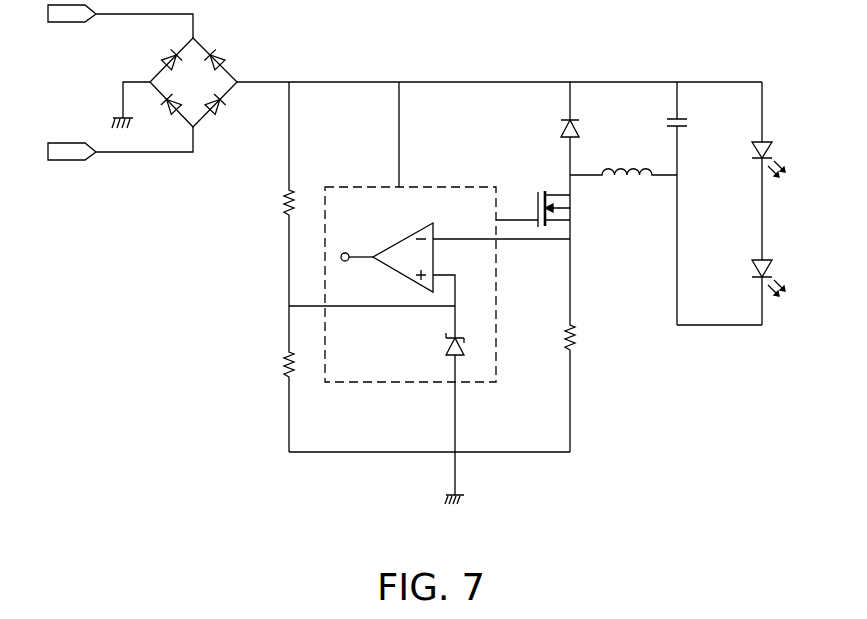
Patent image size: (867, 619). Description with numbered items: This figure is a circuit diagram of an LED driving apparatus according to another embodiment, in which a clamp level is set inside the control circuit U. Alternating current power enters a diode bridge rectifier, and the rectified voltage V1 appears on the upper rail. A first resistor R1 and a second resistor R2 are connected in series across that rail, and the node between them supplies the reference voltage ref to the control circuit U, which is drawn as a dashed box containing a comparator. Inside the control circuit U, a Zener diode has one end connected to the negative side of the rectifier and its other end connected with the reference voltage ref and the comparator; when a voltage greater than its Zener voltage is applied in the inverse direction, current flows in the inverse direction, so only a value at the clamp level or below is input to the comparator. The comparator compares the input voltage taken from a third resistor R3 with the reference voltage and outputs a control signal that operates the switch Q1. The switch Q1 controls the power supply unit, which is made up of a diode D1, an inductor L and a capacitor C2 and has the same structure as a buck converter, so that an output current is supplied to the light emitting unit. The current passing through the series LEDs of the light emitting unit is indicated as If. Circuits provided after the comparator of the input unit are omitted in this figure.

The first resistor R1 is at (273, 194).
The second resistor R2 is at (273, 379).
The third resistor R3 is at (553, 345).
The rectified voltage V1 is at (401, 121).
The control circuit U is at (429, 290).
The reference voltage ref is at (372, 320).
The diode D1 is at (553, 128).
The switch Q1 is at (533, 207).
The inductor L is at (623, 158).
The capacitor C2 is at (661, 203).
The current passing through the light emitting unit If is at (792, 197).